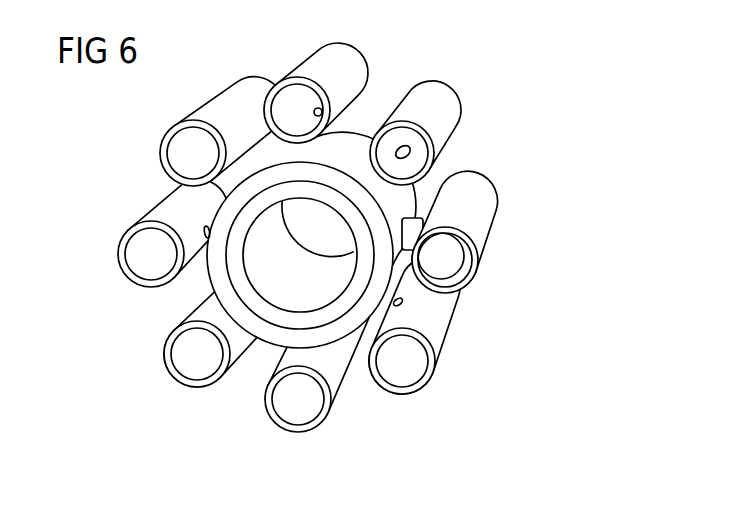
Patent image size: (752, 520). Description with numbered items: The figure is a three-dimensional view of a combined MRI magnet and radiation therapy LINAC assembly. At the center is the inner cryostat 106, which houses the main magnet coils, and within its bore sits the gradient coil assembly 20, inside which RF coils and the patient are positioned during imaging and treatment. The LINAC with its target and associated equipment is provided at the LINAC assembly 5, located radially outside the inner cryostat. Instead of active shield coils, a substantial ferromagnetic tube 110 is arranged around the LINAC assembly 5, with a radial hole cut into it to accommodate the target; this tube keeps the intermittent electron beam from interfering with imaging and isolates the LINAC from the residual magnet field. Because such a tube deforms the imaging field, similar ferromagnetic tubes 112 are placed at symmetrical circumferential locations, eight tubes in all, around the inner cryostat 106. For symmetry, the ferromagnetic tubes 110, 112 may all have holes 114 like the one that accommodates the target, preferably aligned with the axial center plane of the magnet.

The LINAC assembly 5 is at (453, 258).
The gradient coil assembly 20 is at (272, 312).
The inner cryostat 106 is at (352, 138).
The ferromagnetic tube 110 is at (486, 226).
The ferromagnetic tubes 112 is at (247, 84).
The holes 114 is at (313, 110).